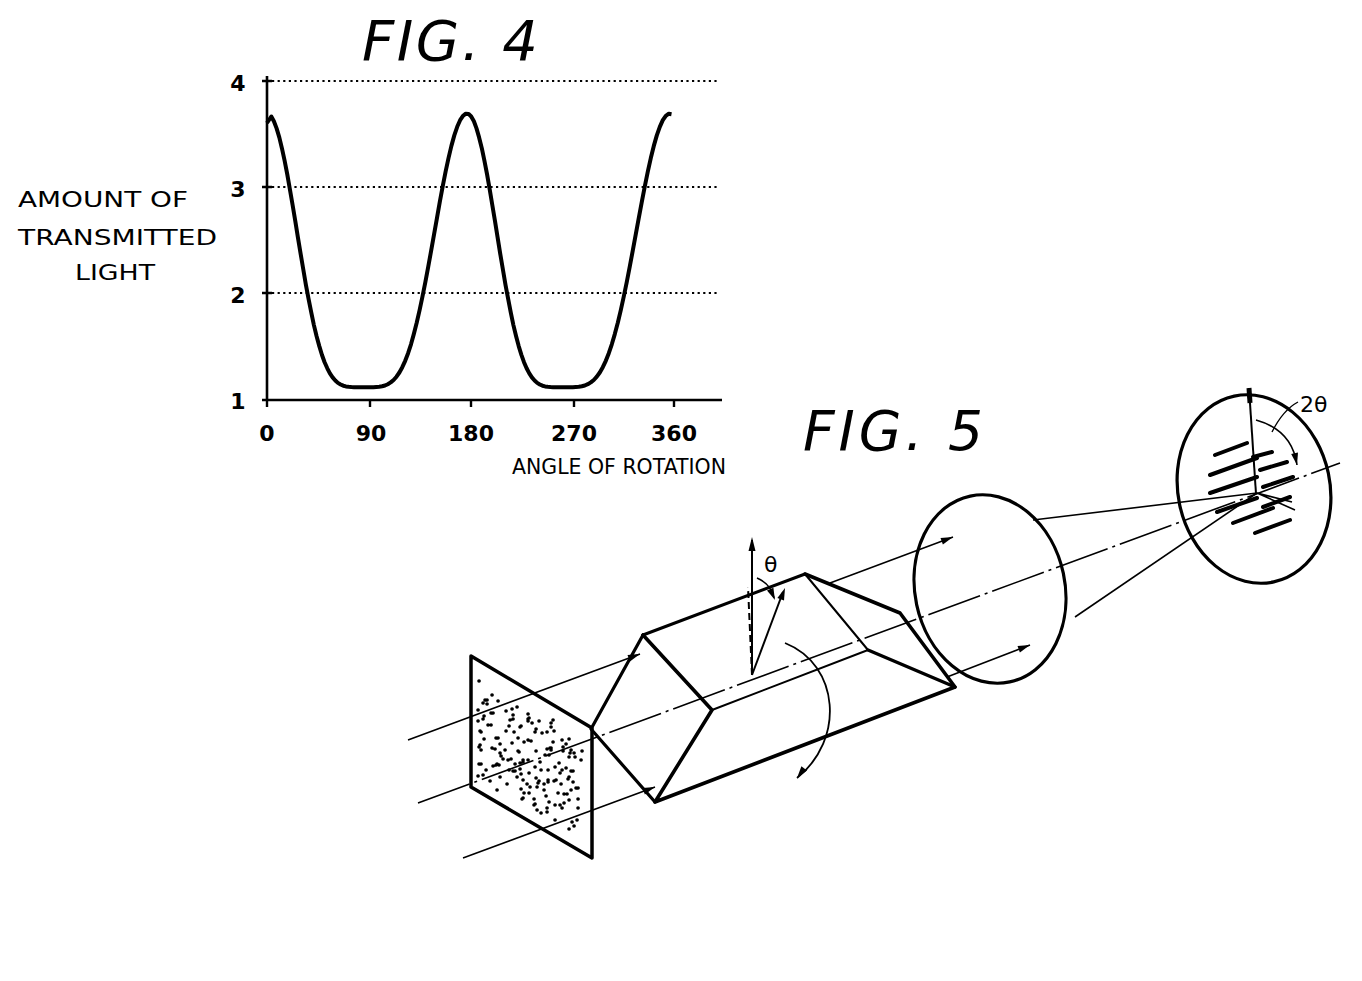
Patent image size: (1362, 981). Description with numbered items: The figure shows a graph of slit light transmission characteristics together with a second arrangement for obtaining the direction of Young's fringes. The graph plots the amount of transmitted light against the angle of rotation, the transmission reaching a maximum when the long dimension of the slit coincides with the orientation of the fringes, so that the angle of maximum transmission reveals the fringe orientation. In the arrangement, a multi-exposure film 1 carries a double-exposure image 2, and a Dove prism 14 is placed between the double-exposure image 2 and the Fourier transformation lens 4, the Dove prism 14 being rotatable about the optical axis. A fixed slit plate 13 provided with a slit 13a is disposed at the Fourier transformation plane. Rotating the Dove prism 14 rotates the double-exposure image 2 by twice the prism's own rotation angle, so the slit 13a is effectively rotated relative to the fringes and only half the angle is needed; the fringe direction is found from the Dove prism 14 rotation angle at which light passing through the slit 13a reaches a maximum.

The multi-exposure film 1 is at (494, 664).
The double-exposure image 2 is at (535, 827).
The Fourier transformation lens 4 is at (1030, 680).
The fixed slit plate 13 is at (1195, 410).
The slit 13a is at (1298, 514).
The Dove prism 14 is at (658, 630).